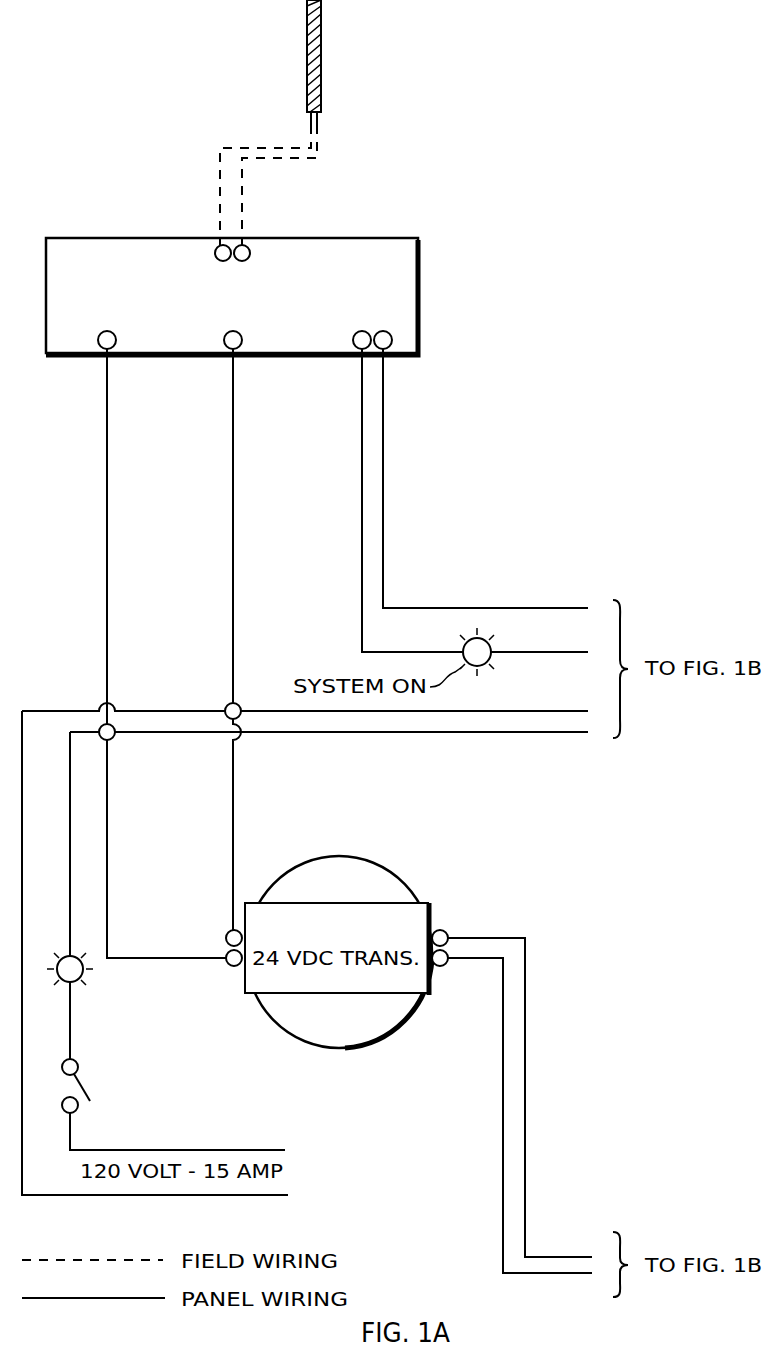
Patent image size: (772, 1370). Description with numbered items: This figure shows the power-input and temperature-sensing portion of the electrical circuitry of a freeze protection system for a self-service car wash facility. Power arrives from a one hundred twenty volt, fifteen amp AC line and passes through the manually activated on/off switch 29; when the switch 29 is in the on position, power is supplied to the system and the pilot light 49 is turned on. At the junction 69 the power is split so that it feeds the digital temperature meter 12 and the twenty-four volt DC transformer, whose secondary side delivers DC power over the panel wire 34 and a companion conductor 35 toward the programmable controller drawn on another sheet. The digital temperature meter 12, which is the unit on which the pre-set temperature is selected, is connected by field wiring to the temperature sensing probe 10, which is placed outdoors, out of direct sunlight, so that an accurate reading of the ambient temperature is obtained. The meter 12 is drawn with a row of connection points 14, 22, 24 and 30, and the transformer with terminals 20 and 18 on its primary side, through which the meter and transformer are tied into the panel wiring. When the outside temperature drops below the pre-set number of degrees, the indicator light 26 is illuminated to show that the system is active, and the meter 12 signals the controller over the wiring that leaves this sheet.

The temperature sensing probe 10 is at (307, 45).
The digital temperature meter 12 is at (107, 238).
The meter terminal 14 is at (103, 352).
The meter terminal 22 is at (229, 352).
The meter terminal 24 is at (358, 352).
The meter terminal 30 is at (388, 352).
The indicator light 26 is at (487, 665).
The junction 69 is at (111, 739).
The transformer primary terminal 20 is at (228, 930).
The transformer primary terminal 18 is at (230, 967).
The panel wire 34 is at (446, 929).
The transformer secondary terminal 35 is at (446, 967).
The pilot light 49 is at (80, 980).
The on/off switch 29 is at (75, 1060).